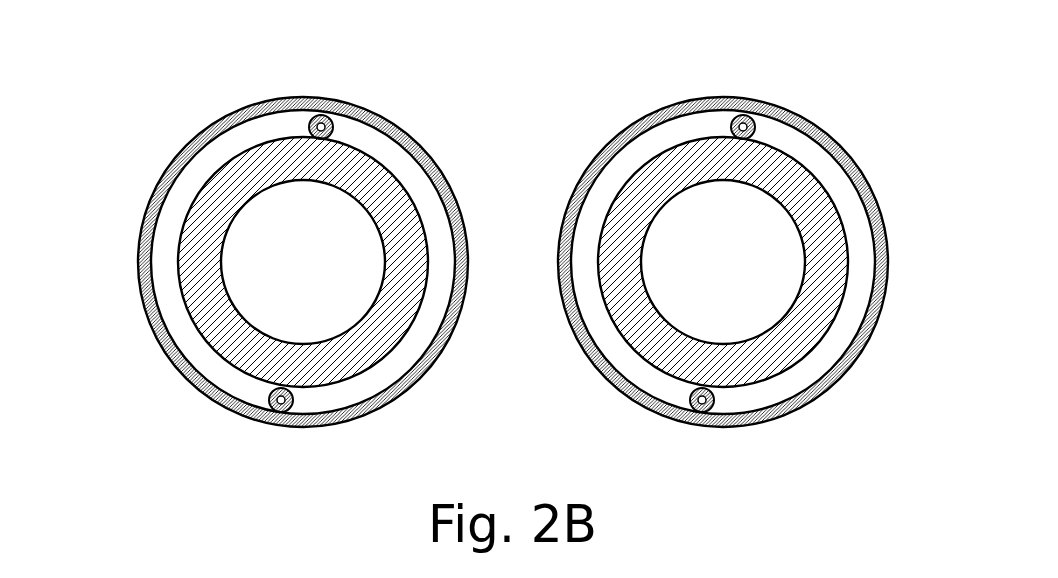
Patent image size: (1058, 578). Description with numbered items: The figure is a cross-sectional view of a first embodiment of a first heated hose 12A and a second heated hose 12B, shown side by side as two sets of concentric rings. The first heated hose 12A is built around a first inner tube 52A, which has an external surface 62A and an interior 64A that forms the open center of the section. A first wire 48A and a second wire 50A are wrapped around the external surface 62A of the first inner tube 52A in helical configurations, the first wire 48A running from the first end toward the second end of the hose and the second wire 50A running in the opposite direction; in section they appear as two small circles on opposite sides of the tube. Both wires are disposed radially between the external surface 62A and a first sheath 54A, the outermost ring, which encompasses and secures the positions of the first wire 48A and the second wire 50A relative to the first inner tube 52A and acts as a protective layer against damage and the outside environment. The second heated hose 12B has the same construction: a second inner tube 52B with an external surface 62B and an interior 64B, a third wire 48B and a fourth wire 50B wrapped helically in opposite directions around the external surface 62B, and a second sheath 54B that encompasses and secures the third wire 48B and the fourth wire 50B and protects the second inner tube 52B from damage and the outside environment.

The first heated hose 12A is at (192, 118).
The second heated hose 12B is at (620, 118).
The first sheath 54A is at (173, 167).
The second sheath 54B is at (833, 150).
The first inner tube 52A is at (193, 238).
The second inner tube 52B is at (825, 237).
The external surface 62A is at (190, 325).
The external surface 62B is at (847, 293).
The interior 64A is at (291, 284).
The interior 64B is at (733, 278).
The first wire 48A is at (325, 117).
The third wire 48B is at (738, 118).
The second wire 50A is at (273, 412).
The fourth wire 50B is at (705, 410).